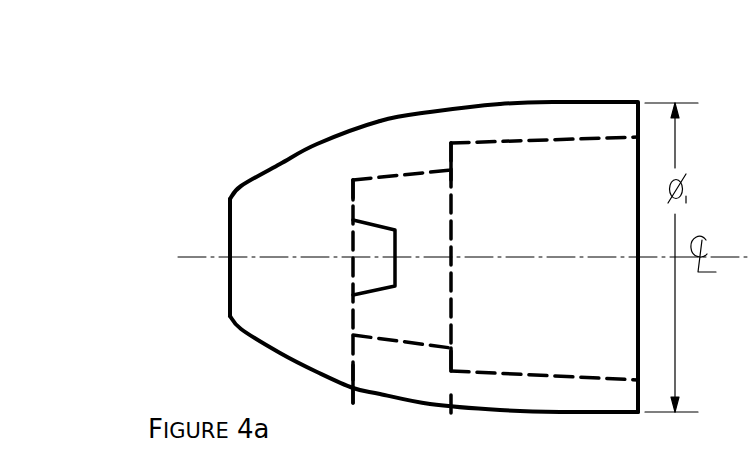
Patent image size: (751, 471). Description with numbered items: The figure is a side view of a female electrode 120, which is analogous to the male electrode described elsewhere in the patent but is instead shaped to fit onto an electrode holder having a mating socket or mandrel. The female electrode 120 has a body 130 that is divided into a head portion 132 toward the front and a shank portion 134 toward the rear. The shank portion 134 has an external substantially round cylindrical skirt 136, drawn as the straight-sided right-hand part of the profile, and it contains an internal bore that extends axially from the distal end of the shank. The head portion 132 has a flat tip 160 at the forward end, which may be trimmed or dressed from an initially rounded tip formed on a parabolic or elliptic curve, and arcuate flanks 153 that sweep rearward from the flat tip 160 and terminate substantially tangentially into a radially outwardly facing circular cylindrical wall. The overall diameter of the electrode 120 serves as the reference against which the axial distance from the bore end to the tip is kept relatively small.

The female electrode 120 is at (218, 76).
The body 130 is at (428, 118).
The head portion 132 is at (322, 147).
The shank portion 134 is at (522, 118).
The external substantially round cylindrical skirt 136 is at (612, 117).
The arcuate flanks 153 is at (263, 345).
The flat tip 160 is at (230, 212).